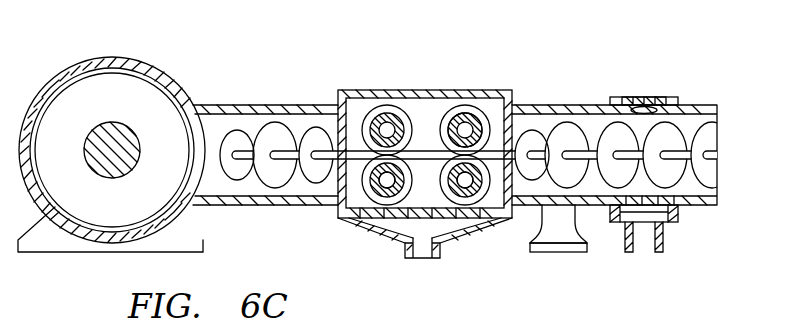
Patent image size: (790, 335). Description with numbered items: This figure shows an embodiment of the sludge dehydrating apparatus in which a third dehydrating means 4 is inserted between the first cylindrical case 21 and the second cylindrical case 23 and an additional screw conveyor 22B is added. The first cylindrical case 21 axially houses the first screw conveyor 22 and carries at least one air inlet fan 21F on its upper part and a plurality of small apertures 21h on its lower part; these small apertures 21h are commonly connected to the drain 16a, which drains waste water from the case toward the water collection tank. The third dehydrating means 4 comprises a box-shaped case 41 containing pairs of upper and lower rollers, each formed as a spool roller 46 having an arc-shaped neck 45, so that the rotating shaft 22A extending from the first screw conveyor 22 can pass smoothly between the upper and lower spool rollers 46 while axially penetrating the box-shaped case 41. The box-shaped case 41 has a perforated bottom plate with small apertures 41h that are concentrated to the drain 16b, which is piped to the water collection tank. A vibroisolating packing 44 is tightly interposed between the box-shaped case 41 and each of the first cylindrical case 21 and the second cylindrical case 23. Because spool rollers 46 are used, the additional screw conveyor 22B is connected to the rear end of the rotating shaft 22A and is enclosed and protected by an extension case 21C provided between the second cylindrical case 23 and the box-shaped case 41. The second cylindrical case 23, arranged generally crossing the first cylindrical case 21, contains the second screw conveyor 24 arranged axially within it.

The third dehydrating means 4 is at (414, 150).
The drain 16a is at (642, 242).
The drain 16b is at (425, 250).
The first cylindrical case 21 is at (690, 205).
The extension case 21C is at (234, 101).
The air inlet fan 21F is at (659, 97).
The small apertures 21h is at (621, 216).
The first screw conveyor 22 is at (563, 130).
The rotating shaft 22A is at (338, 165).
The additional screw conveyor 22B is at (233, 168).
The second cylindrical case 23 is at (74, 74).
The second screw conveyor 24 is at (110, 168).
The box-shaped case 41 is at (376, 106).
The small apertures 41h is at (383, 212).
The vibroisolating packing 44 is at (334, 112).
The arc-shaped neck 45 is at (477, 114).
The spool roller 46 is at (441, 165).